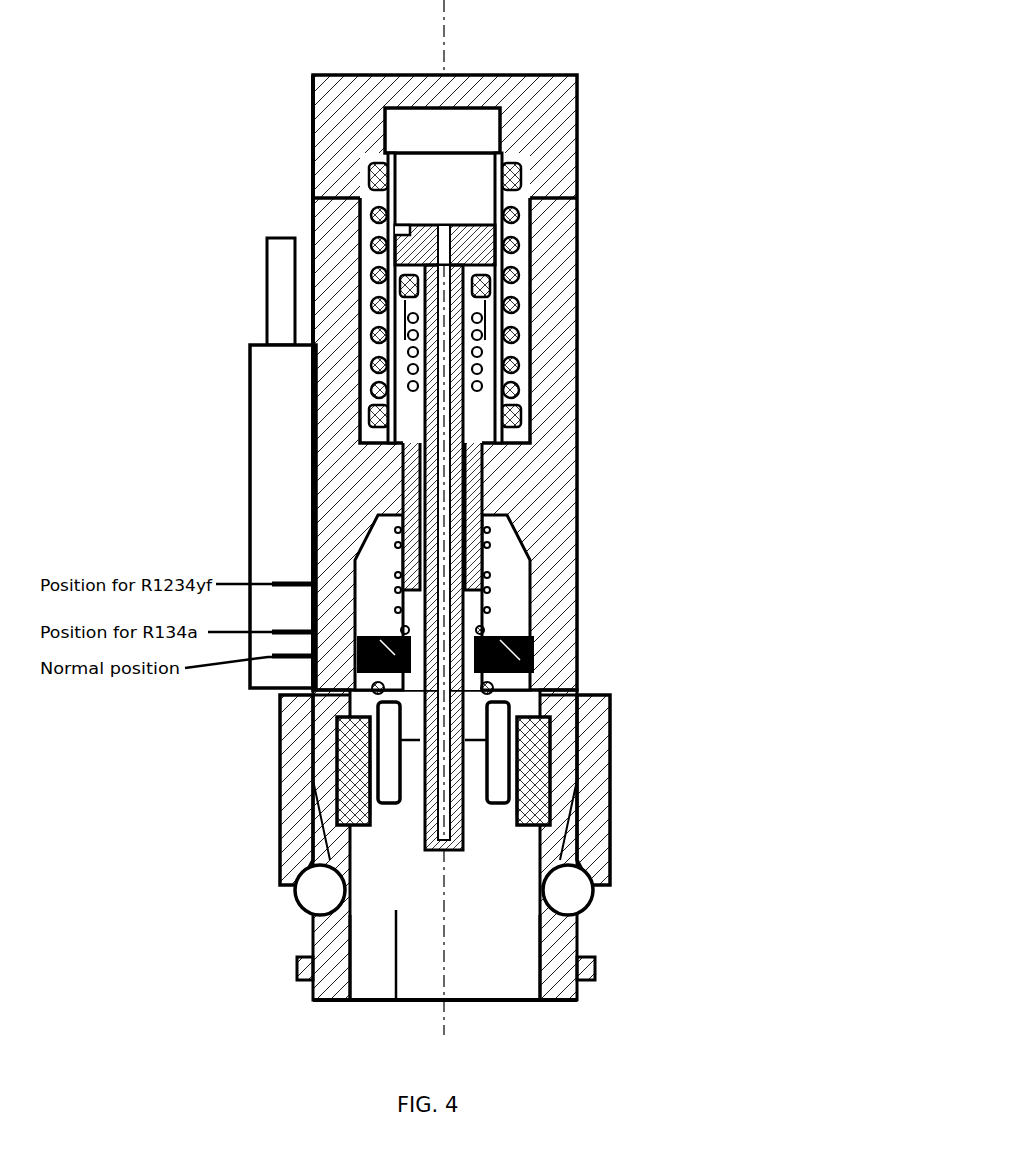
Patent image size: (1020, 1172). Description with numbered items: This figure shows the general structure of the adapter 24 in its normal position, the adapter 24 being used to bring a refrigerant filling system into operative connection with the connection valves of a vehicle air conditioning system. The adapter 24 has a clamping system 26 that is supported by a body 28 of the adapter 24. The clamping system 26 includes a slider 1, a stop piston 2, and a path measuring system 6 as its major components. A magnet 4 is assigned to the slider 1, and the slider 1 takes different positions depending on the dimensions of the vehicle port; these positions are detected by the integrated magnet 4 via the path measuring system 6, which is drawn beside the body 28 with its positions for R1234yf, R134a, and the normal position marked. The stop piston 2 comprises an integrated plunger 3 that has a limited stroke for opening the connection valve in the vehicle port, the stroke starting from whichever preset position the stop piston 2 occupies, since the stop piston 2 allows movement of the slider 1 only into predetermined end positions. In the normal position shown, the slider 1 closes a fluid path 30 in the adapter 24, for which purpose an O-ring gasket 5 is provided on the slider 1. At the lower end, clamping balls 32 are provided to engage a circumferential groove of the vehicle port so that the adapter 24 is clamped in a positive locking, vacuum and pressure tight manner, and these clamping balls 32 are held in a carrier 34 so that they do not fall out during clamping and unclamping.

The slider 1 is at (487, 692).
The stop piston 2 is at (471, 232).
The plunger 3 is at (447, 530).
The magnet 4 is at (513, 622).
The O-ring gasket 5 is at (365, 683).
The path measuring system 6 is at (250, 430).
The adapter 24 is at (255, 111).
The clamping system 26 is at (727, 210).
The body 28 is at (577, 232).
The fluid path 30 is at (396, 1000).
The clamping balls 32 is at (318, 895).
The carrier 34 is at (565, 965).